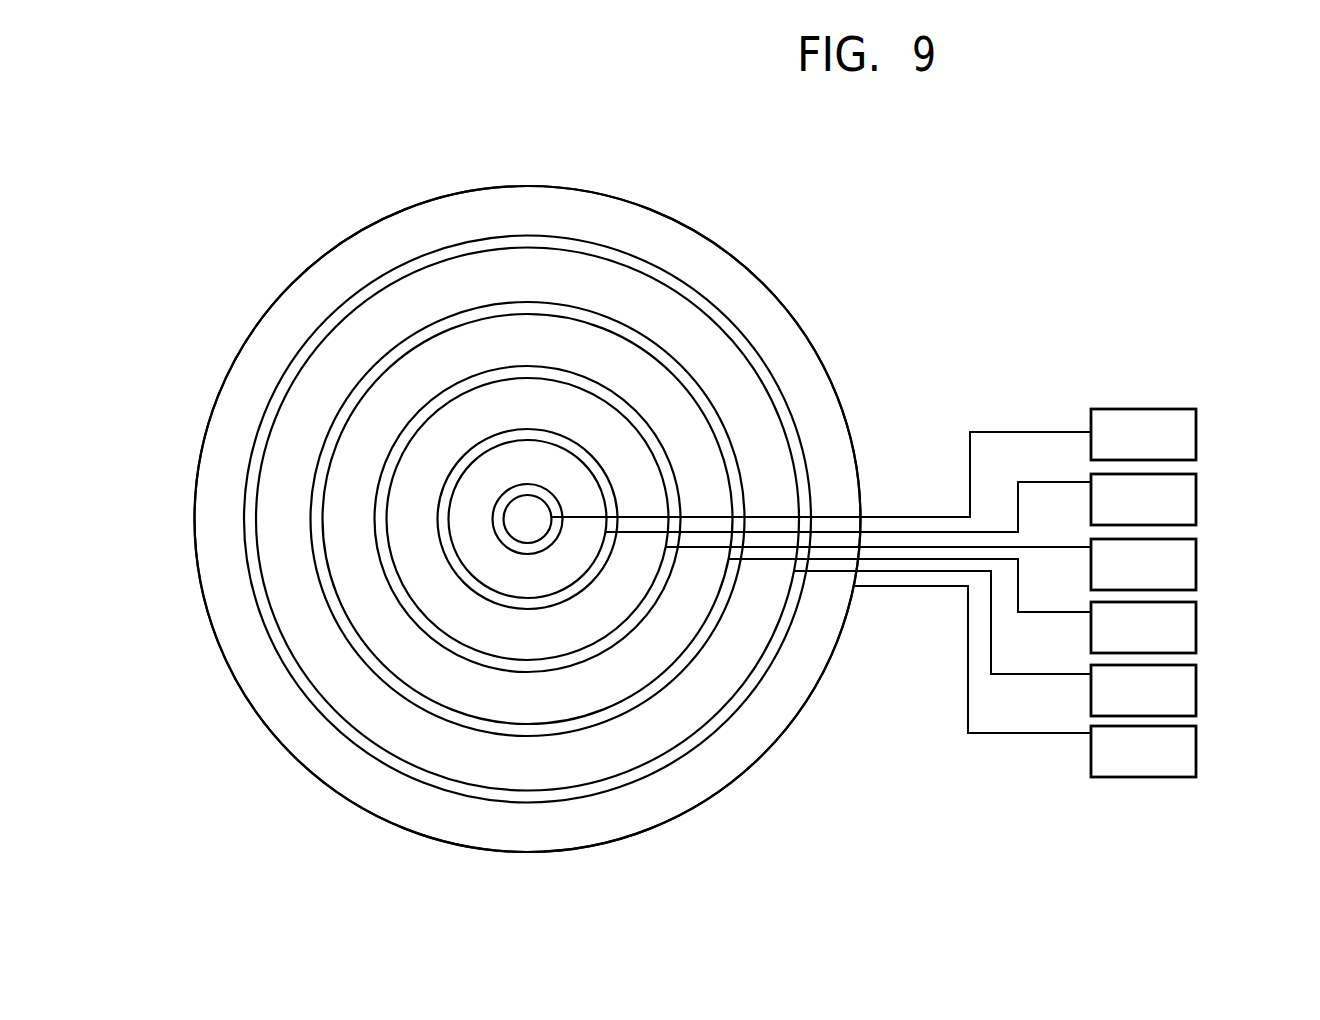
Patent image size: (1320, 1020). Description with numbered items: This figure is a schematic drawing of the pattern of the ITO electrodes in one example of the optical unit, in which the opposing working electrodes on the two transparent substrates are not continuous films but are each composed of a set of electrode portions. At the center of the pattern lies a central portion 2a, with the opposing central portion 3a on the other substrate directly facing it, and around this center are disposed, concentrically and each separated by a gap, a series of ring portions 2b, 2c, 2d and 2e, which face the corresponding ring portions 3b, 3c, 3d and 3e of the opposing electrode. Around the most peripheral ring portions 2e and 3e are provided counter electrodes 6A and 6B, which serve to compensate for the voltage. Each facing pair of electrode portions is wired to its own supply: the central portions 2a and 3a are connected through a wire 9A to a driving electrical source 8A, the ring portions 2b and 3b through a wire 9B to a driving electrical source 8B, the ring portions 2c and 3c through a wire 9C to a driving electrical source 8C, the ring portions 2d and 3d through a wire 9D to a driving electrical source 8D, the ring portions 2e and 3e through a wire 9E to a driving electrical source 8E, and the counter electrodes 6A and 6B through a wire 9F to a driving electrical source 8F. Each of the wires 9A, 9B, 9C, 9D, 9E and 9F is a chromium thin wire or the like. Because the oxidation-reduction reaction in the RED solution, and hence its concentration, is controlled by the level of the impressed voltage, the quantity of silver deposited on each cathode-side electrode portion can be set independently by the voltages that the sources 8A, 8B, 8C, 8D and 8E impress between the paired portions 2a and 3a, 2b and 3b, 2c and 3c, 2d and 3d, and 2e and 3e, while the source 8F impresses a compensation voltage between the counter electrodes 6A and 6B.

The central portion 2a is at (528, 519).
The ring portion 2b is at (528, 519).
The ring portion 2c is at (528, 519).
The ring portion 2d is at (528, 519).
The ring portion 2e is at (527, 519).
The central portion 3a is at (528, 519).
The ring portion 3b is at (528, 519).
The ring portion 3c is at (528, 519).
The ring portion 3d is at (528, 519).
The ring portion 3e is at (527, 519).
The counter electrode 6A is at (528, 519).
The counter electrode 6B is at (528, 519).
The driving electrical source 8A is at (1182, 437).
The driving electrical source 8B is at (1182, 501).
The driving electrical source 8C is at (1182, 566).
The driving electrical source 8D is at (1182, 629).
The driving electrical source 8E is at (1182, 692).
The driving electrical source 8F is at (1182, 753).
The wire 9A is at (1005, 431).
The wire 9B is at (1045, 481).
The wire 9C is at (1067, 546).
The wire 9D is at (1067, 611).
The wire 9E is at (1047, 673).
The wire 9F is at (1019, 732).